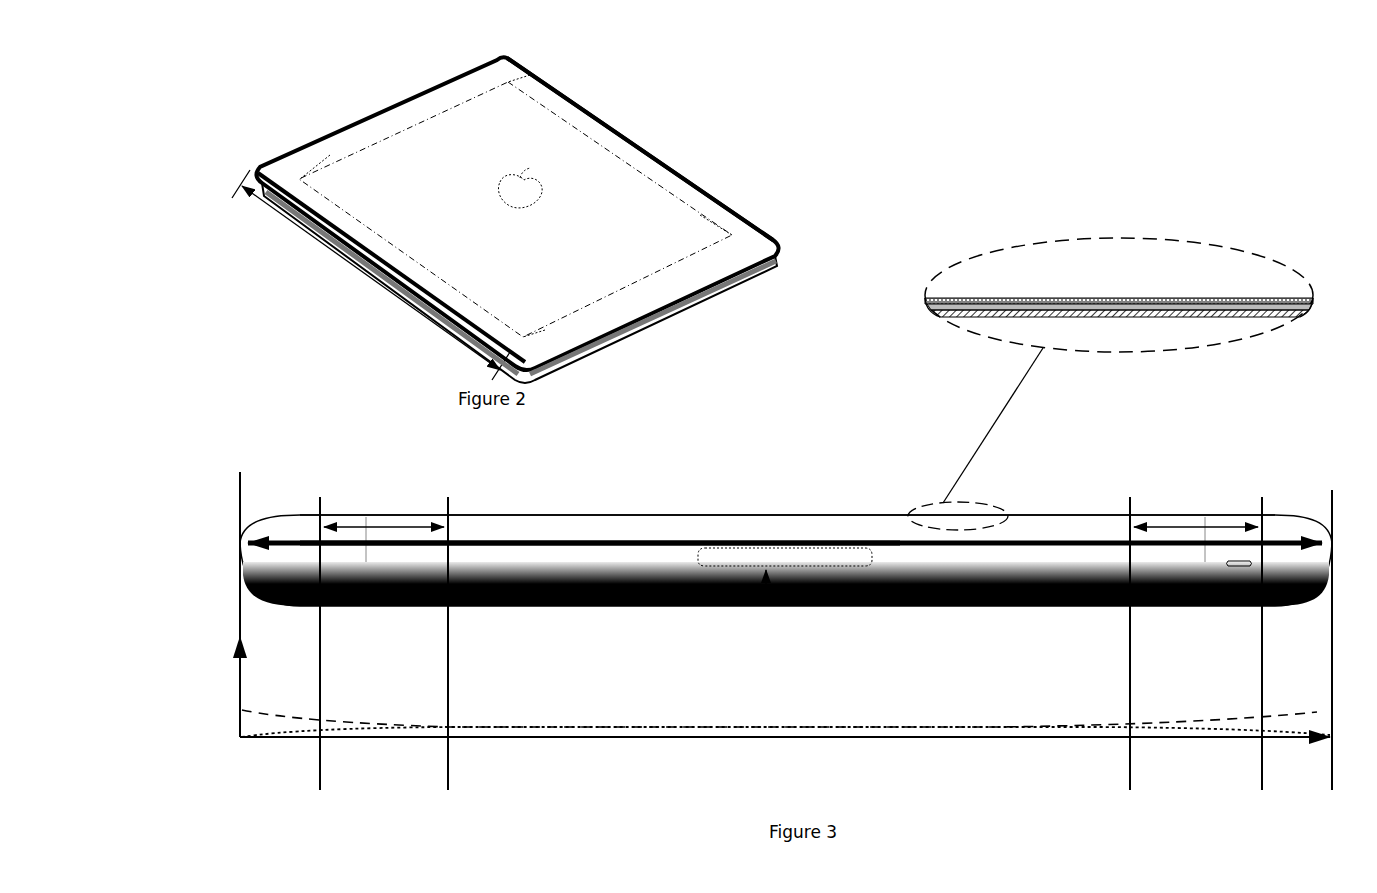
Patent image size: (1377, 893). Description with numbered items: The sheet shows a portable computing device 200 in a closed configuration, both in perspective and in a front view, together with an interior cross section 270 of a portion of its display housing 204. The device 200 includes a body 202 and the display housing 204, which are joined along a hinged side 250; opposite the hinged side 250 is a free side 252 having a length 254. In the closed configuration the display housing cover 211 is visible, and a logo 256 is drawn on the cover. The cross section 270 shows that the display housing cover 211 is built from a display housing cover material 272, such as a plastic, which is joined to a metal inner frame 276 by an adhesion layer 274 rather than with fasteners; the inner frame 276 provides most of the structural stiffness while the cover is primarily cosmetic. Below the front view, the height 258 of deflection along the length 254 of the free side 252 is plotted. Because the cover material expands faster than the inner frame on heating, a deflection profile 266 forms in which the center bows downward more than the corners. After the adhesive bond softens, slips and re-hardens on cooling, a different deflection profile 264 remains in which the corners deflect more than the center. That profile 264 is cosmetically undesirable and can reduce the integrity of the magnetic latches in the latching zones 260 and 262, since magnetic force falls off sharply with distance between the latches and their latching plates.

In FIG. 2, the portable computing device 200 is at (363, 85).
In FIG. 2, the display housing cover 211 is at (515, 206).
In FIG. 3, the display housing cover 211 is at (288, 521).
In FIG. 2, the logo 256 is at (519, 187).
In FIG. 2, the hinged side 250 is at (623, 128).
In FIG. 2, the free side 252 is at (363, 242).
In FIG. 3, the free side 252 is at (578, 533).
In FIG. 2, the length 254 is at (407, 305).
In FIG. 3, the length 254 is at (668, 541).
In FIG. 2, the display housing 204 is at (632, 290).
In FIG. 3, the display housing 204 is at (766, 518).
In FIG. 2, the body 202 is at (582, 343).
In FIG. 3, the body 202 is at (793, 607).
In FIG. 3, the latching zone 260 is at (387, 525).
In FIG. 3, the latching zone 262 is at (1175, 527).
In FIG. 3, the height 258 is at (240, 672).
In FIG. 3, the deflection profile 264 is at (340, 720).
In FIG. 3, the deflection profile 266 is at (337, 736).
In FIG. 3, the interior cross section 270 is at (1100, 240).
In FIG. 3, the display housing cover material 272 is at (1015, 300).
In FIG. 3, the adhesion layer 274 is at (943, 308).
In FIG. 3, the inner frame 276 is at (1010, 323).